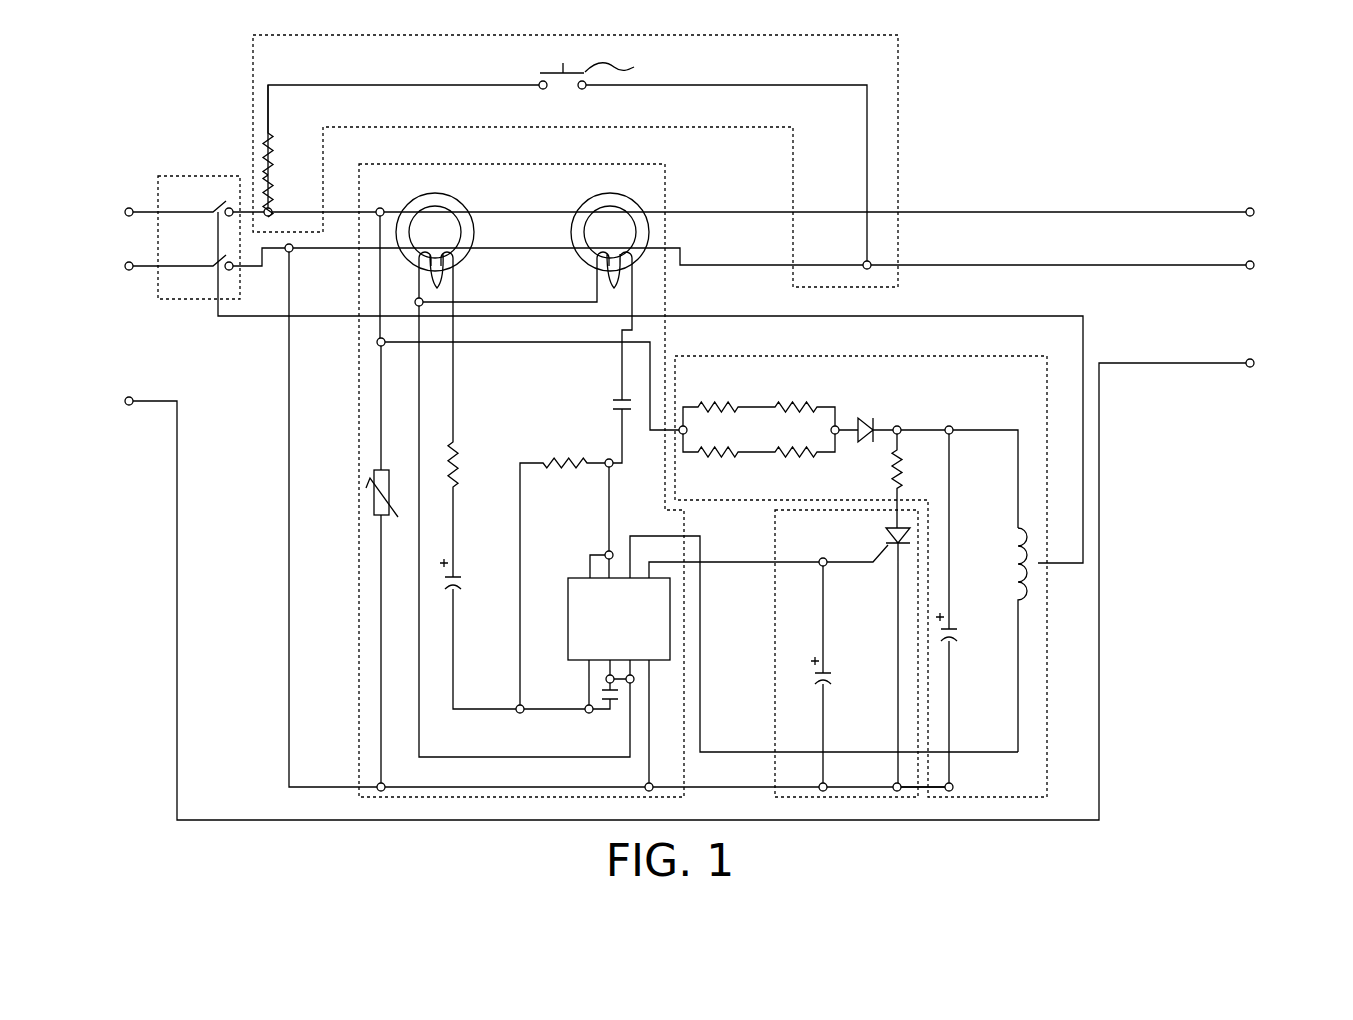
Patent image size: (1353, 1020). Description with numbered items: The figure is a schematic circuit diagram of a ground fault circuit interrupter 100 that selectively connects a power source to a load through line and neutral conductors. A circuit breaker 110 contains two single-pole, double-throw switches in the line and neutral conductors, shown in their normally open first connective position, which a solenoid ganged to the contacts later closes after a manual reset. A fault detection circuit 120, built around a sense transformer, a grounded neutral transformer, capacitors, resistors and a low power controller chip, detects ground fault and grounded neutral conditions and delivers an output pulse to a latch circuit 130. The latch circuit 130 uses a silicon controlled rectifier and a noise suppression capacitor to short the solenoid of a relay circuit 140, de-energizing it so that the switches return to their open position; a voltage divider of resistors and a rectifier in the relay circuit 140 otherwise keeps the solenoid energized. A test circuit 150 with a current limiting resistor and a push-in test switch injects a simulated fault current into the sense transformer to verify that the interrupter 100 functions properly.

The ground fault circuit interrupter 100 is at (976, 180).
The circuit breaker 110 is at (208, 176).
The fault detection circuit 120 is at (657, 162).
The latch circuit 130 is at (773, 623).
The relay circuit 140 is at (906, 357).
The test circuit 150 is at (898, 48).